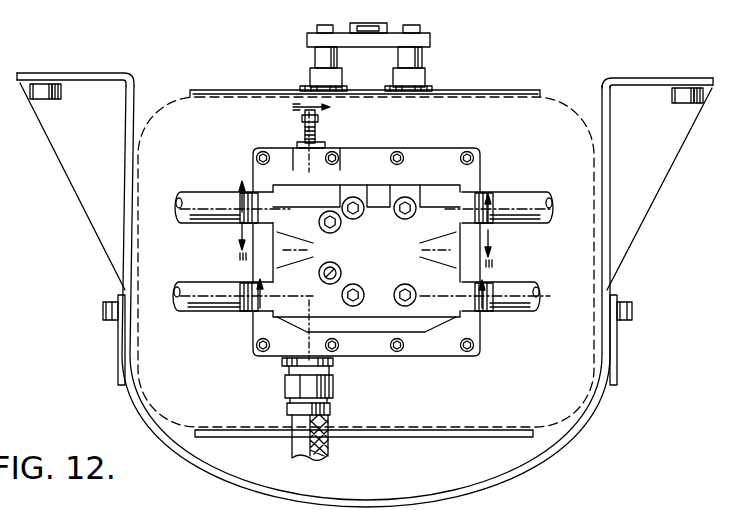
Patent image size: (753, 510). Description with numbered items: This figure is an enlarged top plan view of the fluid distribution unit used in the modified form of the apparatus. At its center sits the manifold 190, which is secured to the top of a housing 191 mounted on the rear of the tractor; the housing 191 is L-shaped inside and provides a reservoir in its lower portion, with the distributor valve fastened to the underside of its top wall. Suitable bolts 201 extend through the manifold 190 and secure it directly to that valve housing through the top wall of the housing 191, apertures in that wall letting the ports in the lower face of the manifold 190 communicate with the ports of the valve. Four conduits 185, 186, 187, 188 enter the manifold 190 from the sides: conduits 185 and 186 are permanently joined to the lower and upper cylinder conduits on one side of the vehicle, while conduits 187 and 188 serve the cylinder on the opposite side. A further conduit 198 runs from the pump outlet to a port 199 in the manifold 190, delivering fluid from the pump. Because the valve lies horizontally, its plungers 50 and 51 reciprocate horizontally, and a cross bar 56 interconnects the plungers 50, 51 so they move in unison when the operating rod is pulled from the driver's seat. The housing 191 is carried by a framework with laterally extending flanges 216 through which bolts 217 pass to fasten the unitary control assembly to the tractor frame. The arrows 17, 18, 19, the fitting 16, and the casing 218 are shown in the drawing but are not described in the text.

The bleeder fitting 16 is at (347, 369).
The flow direction arrow 17 is at (367, 293).
The flow direction arrow 18 is at (370, 244).
The flow direction arrow 19 is at (368, 187).
The plunger 50 is at (316, 54).
The plunger 51 is at (417, 63).
The cross bar 56 is at (427, 42).
The conduit 185 is at (533, 193).
The conduit 186 is at (523, 311).
The conduit 187 is at (208, 218).
The conduit 188 is at (200, 303).
The manifold 190 is at (420, 185).
The housing 191 is at (538, 115).
The conduit 198 is at (330, 422).
The port 199 is at (282, 371).
The bolt 201 is at (342, 150).
The laterally extending flange 216 is at (53, 80).
The bolt 217 is at (43, 100).
The outer casing 218 is at (612, 388).